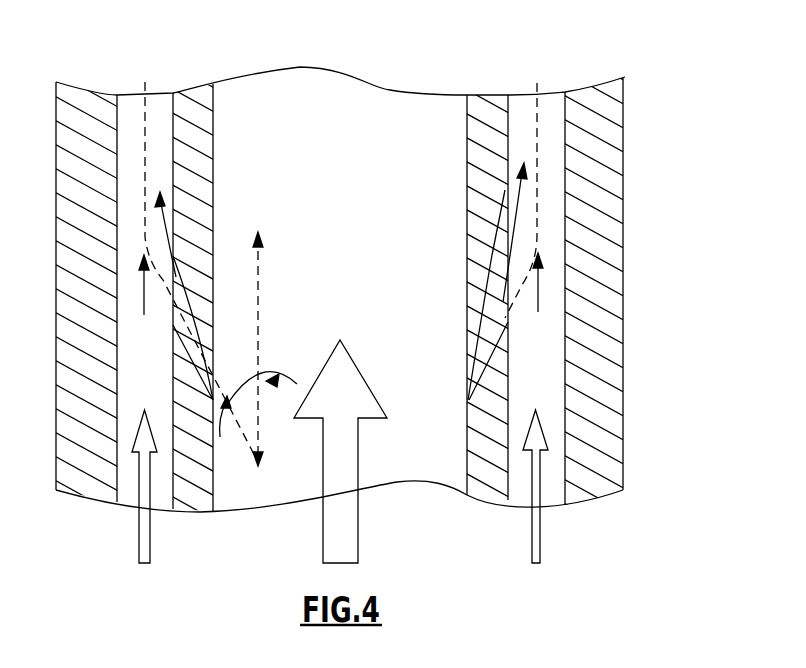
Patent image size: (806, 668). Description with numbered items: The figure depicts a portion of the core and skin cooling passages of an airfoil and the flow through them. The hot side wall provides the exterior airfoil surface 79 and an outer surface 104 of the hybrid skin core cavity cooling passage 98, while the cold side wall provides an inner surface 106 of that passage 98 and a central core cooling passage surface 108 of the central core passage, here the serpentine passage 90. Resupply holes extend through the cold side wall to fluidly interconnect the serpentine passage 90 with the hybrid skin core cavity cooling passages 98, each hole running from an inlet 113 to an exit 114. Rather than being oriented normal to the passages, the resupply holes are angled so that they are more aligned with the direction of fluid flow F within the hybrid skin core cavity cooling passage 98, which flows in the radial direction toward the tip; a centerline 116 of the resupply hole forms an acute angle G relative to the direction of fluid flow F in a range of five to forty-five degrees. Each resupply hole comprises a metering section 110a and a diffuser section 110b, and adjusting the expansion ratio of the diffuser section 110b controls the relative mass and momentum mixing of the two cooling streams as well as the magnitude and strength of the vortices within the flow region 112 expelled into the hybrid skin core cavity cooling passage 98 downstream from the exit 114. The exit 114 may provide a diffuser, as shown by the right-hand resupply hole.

The exterior airfoil surface 79 is at (50, 302).
The serpentine passage 90 is at (391, 166).
The hybrid skin core cavity cooling passage 98 is at (161, 494).
The outer surface 104 is at (121, 113).
The inner surface 106 is at (171, 100).
The central core cooling passage surface 108 is at (214, 116).
The metering section 110a is at (487, 290).
The diffuser section 110b is at (500, 250).
The flow region 112 is at (523, 116).
The inlet 113 is at (467, 390).
The exit 114 is at (500, 208).
The centerline 116 is at (185, 308).
The direction of fluid flow F is at (258, 297).
The acute angle G is at (239, 391).